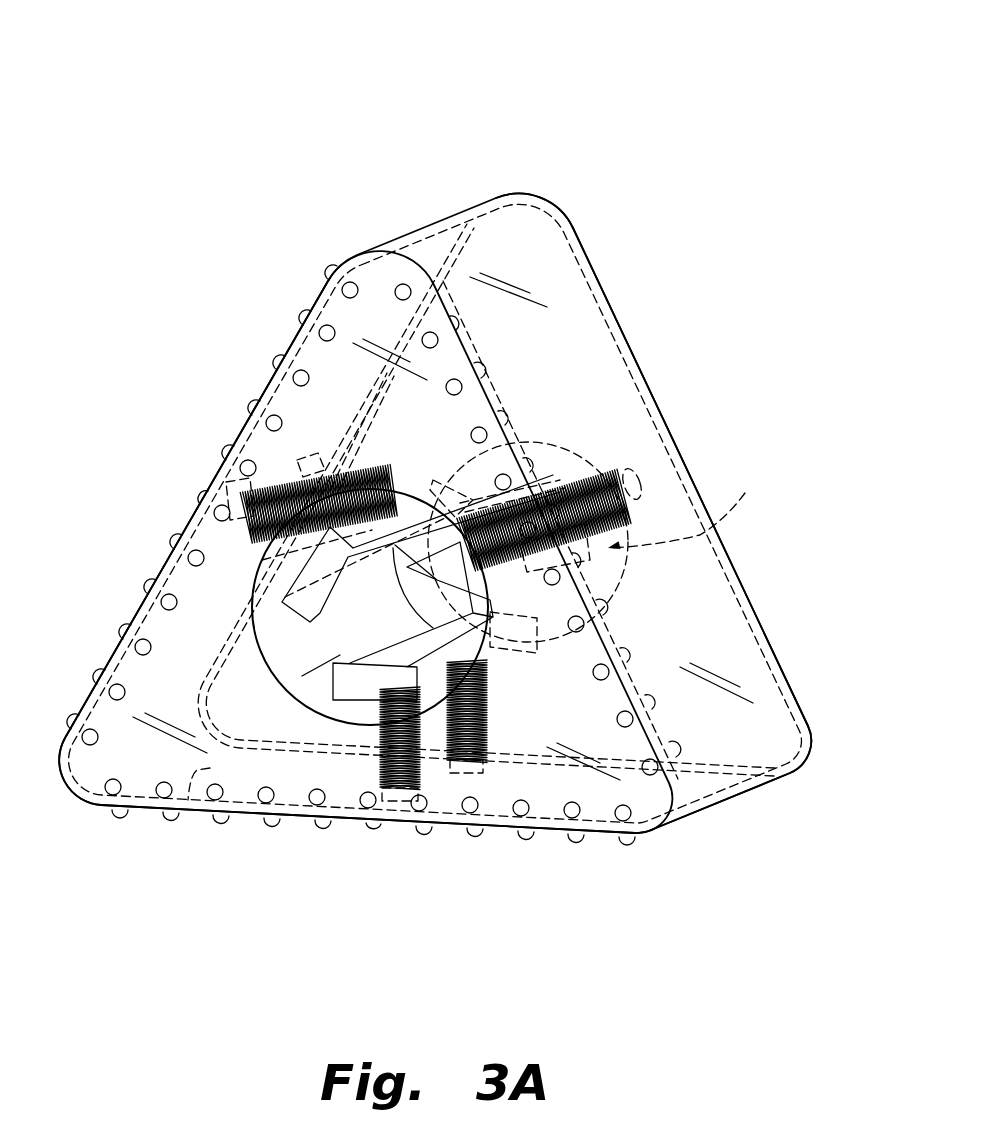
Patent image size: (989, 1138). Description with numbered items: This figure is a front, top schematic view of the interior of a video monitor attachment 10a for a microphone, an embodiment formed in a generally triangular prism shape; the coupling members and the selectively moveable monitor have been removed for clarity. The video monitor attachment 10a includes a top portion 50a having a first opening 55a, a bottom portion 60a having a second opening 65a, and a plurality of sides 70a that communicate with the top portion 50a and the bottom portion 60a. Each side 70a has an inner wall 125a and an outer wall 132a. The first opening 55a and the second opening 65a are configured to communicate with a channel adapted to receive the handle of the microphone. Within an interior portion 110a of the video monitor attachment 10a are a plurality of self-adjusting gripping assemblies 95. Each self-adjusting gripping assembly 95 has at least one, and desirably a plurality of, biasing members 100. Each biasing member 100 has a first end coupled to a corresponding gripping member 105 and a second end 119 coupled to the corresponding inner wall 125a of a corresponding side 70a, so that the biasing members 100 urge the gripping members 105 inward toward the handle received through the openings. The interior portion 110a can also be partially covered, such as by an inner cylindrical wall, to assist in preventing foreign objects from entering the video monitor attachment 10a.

The video monitor attachment 10a is at (181, 82).
The top portion 50a is at (123, 752).
The bottom portion 60a is at (652, 352).
The side 70a is at (573, 355).
The outer wall 132a is at (176, 515).
The gripping member 105 is at (282, 667).
The self-adjusting gripping assembly 95 is at (410, 450).
The second end 119 is at (285, 448).
The biasing member 100 is at (362, 462).
The interior portion 110a is at (298, 672).
The first opening 55a is at (302, 676).
The inner wall 125a is at (747, 607).
The second opening 65a is at (696, 508).